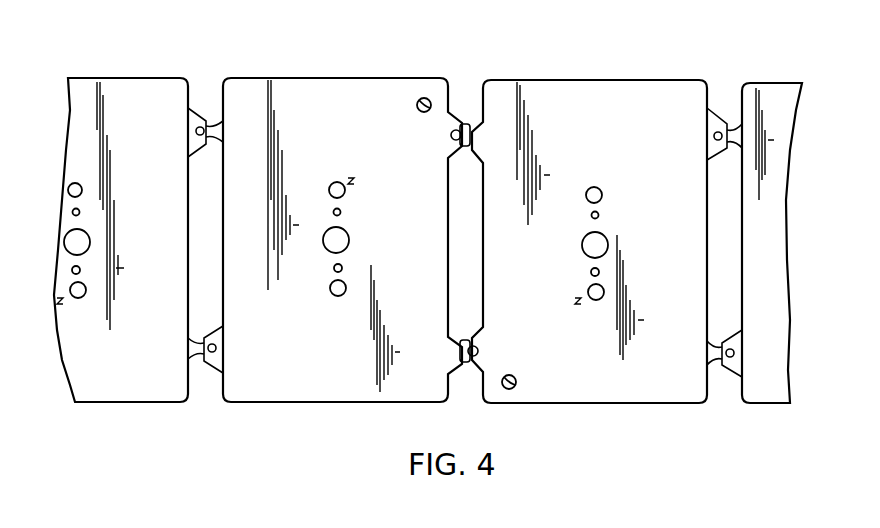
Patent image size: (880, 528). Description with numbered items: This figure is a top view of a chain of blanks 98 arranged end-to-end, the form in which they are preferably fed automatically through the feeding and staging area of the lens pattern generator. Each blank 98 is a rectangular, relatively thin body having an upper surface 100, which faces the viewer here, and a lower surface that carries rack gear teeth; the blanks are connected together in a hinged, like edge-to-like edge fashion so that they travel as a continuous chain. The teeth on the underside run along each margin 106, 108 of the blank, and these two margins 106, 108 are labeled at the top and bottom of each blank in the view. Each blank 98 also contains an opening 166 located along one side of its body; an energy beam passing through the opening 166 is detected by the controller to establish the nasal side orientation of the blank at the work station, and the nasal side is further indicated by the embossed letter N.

The blank 98 is at (148, 68).
The upper surface 100 is at (163, 224).
The margin 106 is at (120, 78).
The margin 108 is at (133, 402).
The opening 166 is at (417, 105).